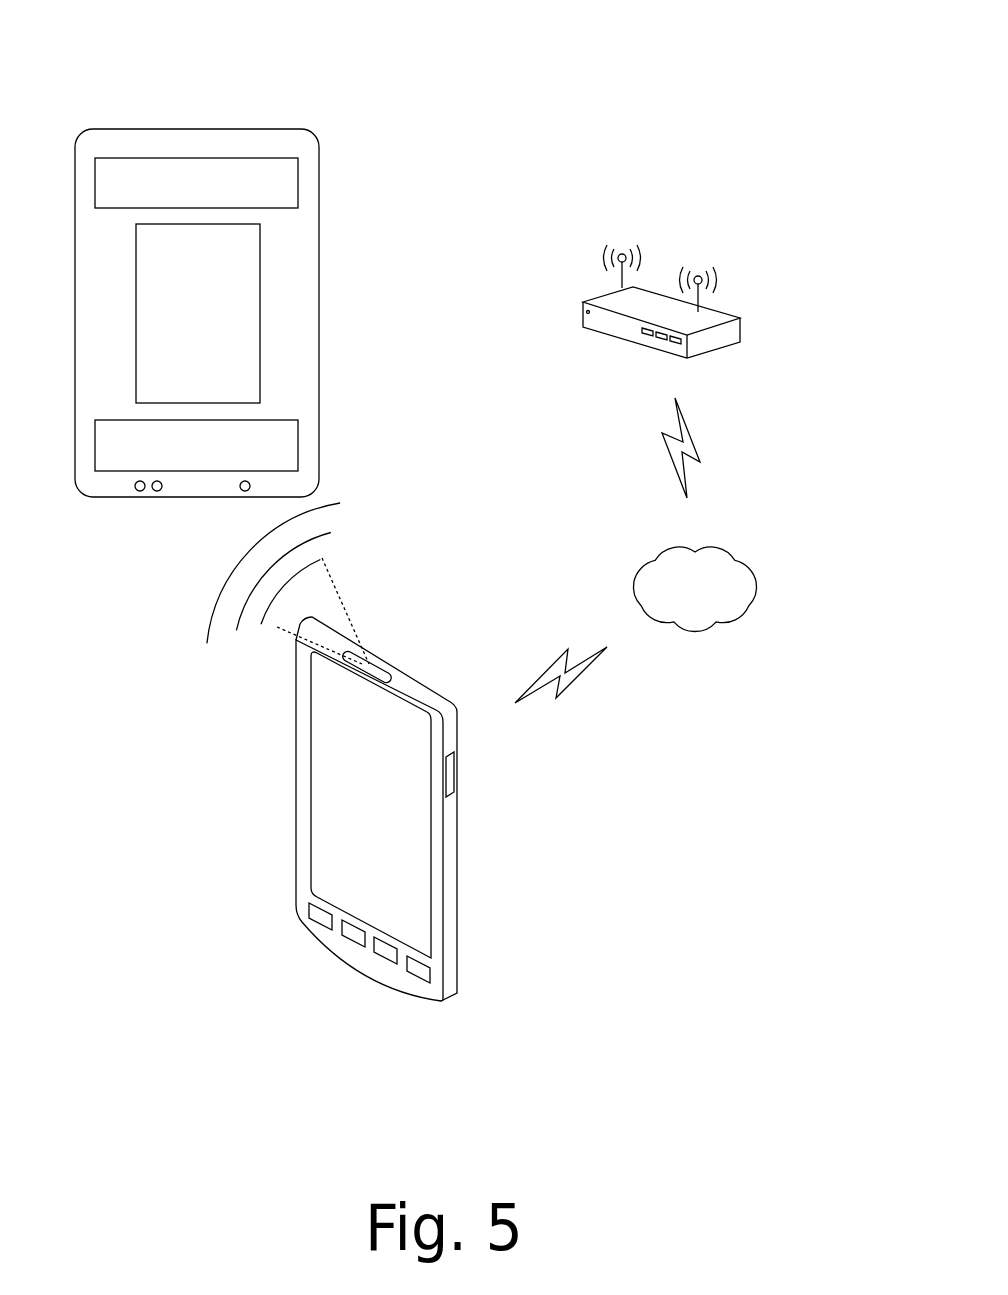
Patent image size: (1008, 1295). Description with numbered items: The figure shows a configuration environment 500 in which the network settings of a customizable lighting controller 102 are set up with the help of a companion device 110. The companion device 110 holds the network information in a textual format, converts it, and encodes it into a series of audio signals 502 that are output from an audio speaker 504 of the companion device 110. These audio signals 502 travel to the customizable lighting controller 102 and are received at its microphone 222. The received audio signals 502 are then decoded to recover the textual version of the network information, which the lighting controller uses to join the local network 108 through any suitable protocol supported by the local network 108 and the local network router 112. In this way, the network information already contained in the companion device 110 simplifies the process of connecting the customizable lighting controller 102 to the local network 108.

The configuration environment 500 is at (782, 74).
The customizable lighting controller 102 is at (270, 124).
The microphone 222 is at (233, 504).
The audio signals 502 is at (228, 650).
The companion device 110 is at (442, 1010).
The audio speaker 504 is at (381, 666).
The local network router 112 is at (735, 297).
The local network 108 is at (677, 598).